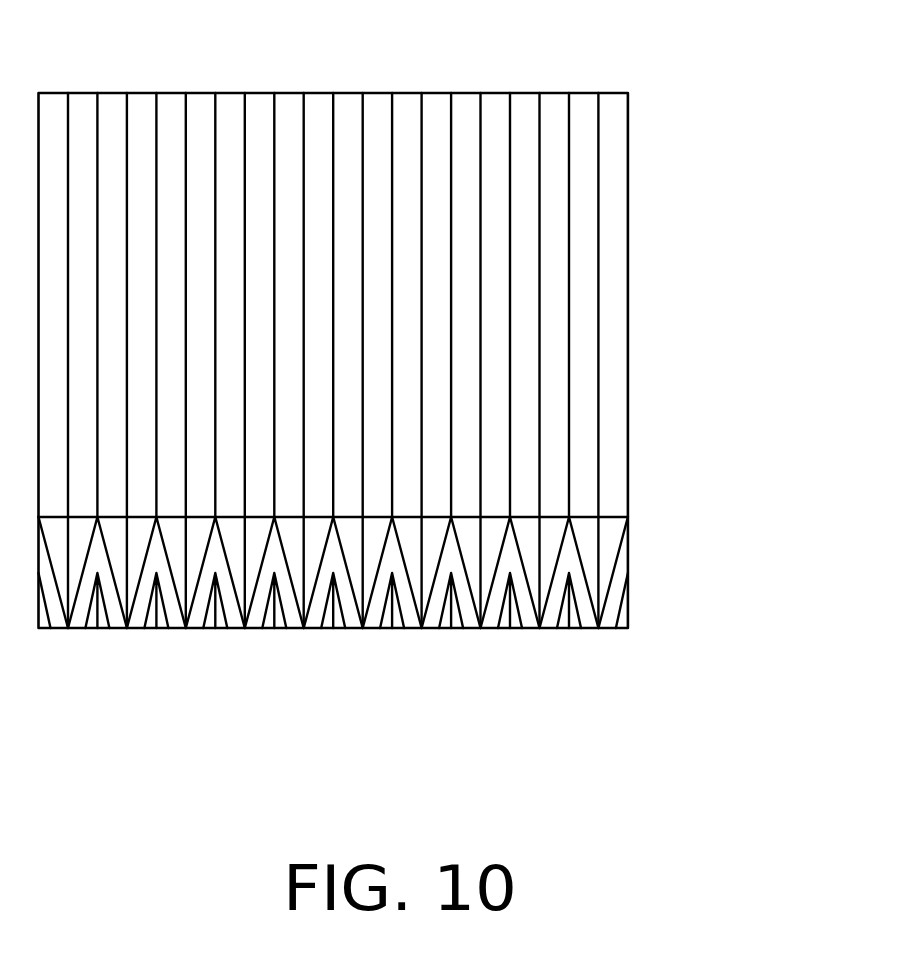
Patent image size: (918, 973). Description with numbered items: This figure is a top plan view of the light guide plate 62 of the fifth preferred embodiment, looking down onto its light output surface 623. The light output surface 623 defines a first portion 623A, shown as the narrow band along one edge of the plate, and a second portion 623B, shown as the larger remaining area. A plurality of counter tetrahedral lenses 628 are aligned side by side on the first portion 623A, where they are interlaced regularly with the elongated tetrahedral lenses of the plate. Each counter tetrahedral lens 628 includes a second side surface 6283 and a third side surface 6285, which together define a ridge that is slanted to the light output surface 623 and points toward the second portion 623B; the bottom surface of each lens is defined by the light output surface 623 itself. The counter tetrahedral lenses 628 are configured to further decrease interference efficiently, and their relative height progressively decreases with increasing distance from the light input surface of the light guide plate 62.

The light guide plate 62 is at (340, 64).
The light output surface 623 is at (460, 432).
The first portion 623A is at (402, 644).
The second portion 623B is at (641, 95).
The counter tetrahedral lens 628 is at (358, 644).
The second side surface 6283 is at (590, 625).
The third side surface 6285 is at (333, 645).